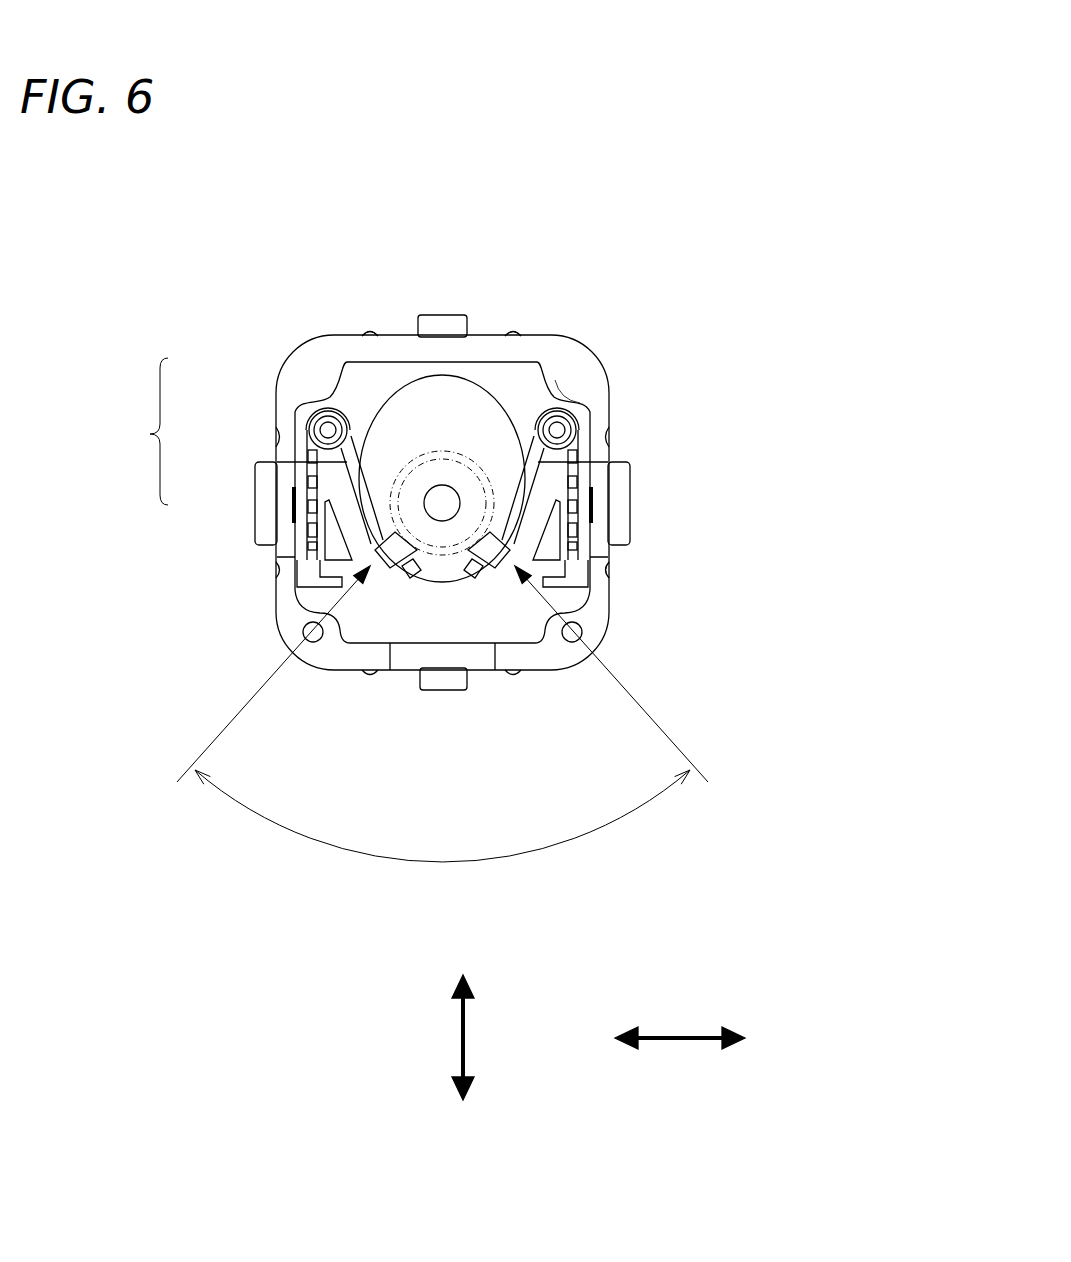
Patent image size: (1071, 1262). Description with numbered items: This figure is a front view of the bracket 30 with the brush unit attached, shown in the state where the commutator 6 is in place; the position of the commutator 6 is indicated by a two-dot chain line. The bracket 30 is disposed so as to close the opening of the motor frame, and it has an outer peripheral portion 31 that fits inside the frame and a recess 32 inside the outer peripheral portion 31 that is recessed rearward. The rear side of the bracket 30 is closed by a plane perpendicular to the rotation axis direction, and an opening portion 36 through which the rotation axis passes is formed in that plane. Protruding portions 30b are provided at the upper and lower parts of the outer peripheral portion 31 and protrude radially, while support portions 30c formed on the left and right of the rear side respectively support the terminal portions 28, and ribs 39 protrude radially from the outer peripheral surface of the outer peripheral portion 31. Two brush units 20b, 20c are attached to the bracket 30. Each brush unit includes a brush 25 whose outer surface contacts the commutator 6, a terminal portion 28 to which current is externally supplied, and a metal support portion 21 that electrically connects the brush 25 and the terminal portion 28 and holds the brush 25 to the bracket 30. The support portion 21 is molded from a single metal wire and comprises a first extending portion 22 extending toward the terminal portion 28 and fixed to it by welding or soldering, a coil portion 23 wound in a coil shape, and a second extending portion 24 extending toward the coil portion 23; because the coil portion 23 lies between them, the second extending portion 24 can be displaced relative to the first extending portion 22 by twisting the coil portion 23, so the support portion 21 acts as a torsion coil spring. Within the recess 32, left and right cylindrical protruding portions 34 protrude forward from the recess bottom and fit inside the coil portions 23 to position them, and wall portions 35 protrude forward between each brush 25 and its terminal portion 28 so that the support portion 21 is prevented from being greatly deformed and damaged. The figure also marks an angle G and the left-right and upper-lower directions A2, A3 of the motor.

The commutator 6 is at (477, 447).
The brush unit 20b is at (300, 640).
The brush unit 20c is at (583, 618).
The support portion 21 is at (133, 431).
The first extending portion 22 is at (297, 457).
The coil portion 23 is at (297, 403).
The second extending portion 24 is at (297, 492).
The brush 25 is at (375, 562).
The terminal portion 28 is at (293, 557).
The bracket 30 is at (318, 332).
The protruding portion 30b is at (440, 315).
The support portion 30c is at (263, 532).
The outer peripheral portion 31 is at (620, 580).
The recess 32 is at (577, 364).
The protruding portion 34 is at (322, 405).
The wall portion 35 is at (330, 562).
The opening portion 36 is at (370, 330).
The rib 39 is at (612, 437).
The angle G is at (442, 714).
The left-right direction A2 is at (693, 1032).
The upper-lower direction A3 is at (460, 1027).